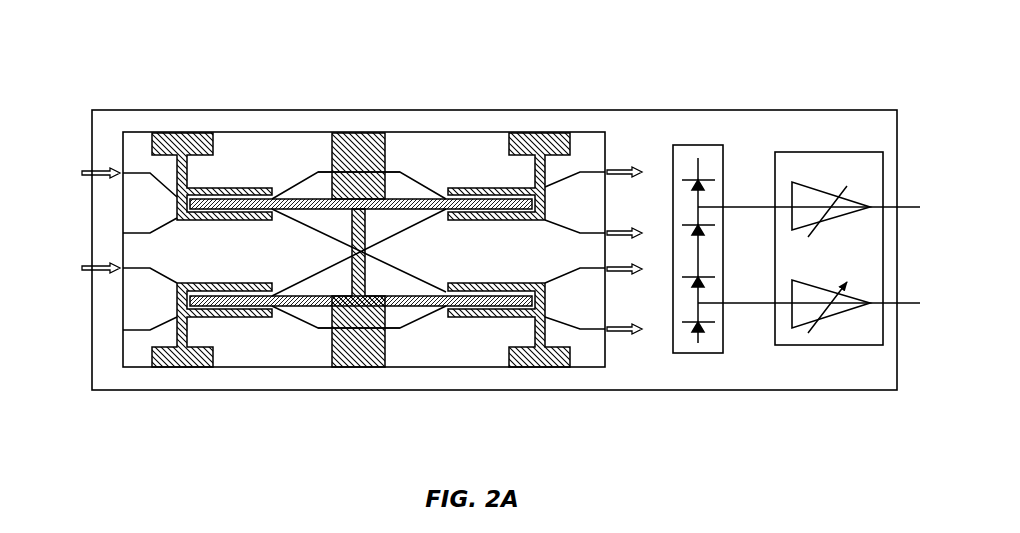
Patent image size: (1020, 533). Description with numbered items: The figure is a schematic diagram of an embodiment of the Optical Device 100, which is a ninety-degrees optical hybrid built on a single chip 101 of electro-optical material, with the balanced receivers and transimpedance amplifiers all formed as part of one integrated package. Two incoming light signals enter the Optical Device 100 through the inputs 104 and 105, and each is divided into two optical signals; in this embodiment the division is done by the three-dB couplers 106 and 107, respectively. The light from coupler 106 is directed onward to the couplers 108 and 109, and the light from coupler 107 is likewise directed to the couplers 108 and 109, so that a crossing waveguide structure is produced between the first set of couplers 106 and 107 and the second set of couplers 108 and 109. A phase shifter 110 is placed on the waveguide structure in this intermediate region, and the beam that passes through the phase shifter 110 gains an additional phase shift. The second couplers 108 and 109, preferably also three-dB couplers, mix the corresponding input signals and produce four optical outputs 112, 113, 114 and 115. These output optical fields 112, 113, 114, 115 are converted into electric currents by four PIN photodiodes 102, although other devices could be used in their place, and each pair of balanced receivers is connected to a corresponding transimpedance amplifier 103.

The optical device 100 is at (140, 44).
The optical hybrid substrate 101 is at (590, 370).
The PIN photodiodes 102 is at (697, 355).
The transimpedance amplifier 103 is at (828, 348).
The input 104 is at (105, 198).
The input 105 is at (105, 294).
The 3 dB coupler 106 is at (233, 186).
The 3 dB coupler 107 is at (233, 308).
The 3 dB coupler 108 is at (485, 186).
The 3 dB coupler 109 is at (485, 308).
The phase shifter 110 is at (360, 147).
The optical output 112 is at (631, 159).
The optical output 113 is at (631, 220).
The optical output 114 is at (630, 257).
The optical output 115 is at (630, 317).